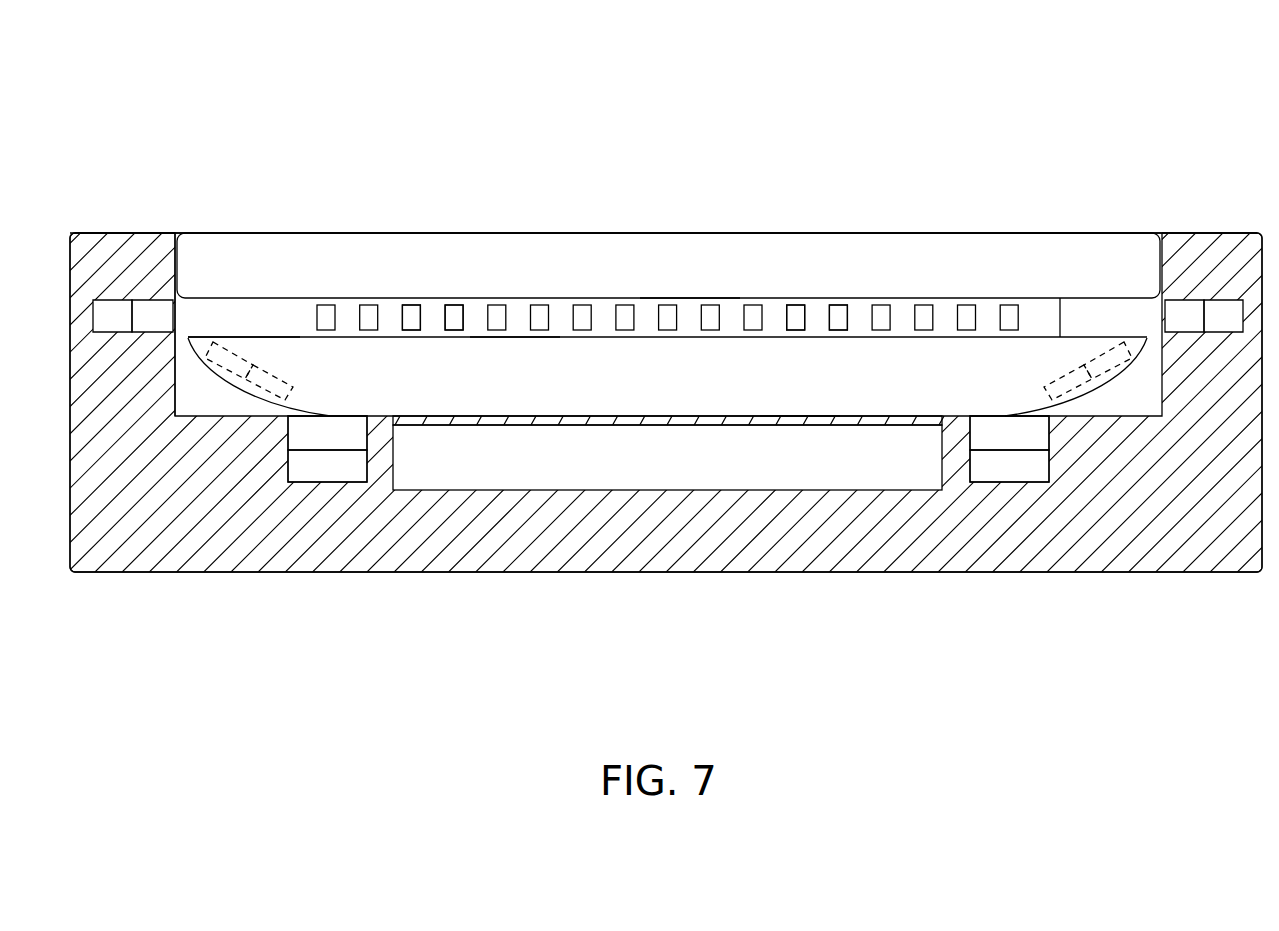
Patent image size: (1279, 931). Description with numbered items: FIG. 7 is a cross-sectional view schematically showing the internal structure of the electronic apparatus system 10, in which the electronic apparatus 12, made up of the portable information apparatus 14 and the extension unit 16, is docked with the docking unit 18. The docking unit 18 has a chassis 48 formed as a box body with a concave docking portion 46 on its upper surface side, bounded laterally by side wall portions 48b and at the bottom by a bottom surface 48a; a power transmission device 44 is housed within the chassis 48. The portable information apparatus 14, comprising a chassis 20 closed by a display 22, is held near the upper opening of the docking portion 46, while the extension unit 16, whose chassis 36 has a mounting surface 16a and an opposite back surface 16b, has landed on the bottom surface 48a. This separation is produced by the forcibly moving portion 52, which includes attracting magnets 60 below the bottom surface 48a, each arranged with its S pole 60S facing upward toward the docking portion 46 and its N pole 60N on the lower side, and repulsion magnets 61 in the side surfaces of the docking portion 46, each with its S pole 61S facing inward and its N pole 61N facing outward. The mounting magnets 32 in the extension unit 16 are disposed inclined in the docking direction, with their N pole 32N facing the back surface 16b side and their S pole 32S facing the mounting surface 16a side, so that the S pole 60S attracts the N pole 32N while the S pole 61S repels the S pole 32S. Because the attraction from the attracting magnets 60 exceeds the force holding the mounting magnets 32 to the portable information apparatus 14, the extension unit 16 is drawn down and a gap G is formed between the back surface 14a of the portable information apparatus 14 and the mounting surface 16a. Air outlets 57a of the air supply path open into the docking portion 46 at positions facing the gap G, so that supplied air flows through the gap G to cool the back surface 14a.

The electronic apparatus system 10 is at (86, 76).
The electronic apparatus 12 is at (667, 215).
The portable information apparatus 14 is at (910, 232).
The back surface 14a is at (692, 305).
The extension unit 16 is at (945, 335).
The mounting surface 16a is at (516, 330).
The back surface 16b is at (800, 420).
The docking unit 18 is at (150, 232).
The chassis 20 is at (1030, 260).
The display 22 is at (615, 233).
The mounting magnet 32 is at (668, 528).
The N pole 32N is at (260, 390).
The S pole 32S is at (222, 368).
The chassis 36 is at (298, 355).
The power transmission device 44 is at (500, 470).
The docking portion 46 is at (250, 315).
The chassis 48 is at (600, 573).
The bottom surface 48a is at (700, 405).
The side wall portion 48b is at (115, 250).
The forcibly moving portion 52 is at (668, 449).
The air outlet 57a is at (454, 302).
The attracting magnet 60 is at (668, 548).
The N pole 60N is at (340, 465).
The S pole 60S is at (312, 435).
The repulsion magnet 61 is at (667, 490).
The N pole 61N is at (110, 318).
The S pole 61S is at (150, 318).
The gap G is at (1075, 315).